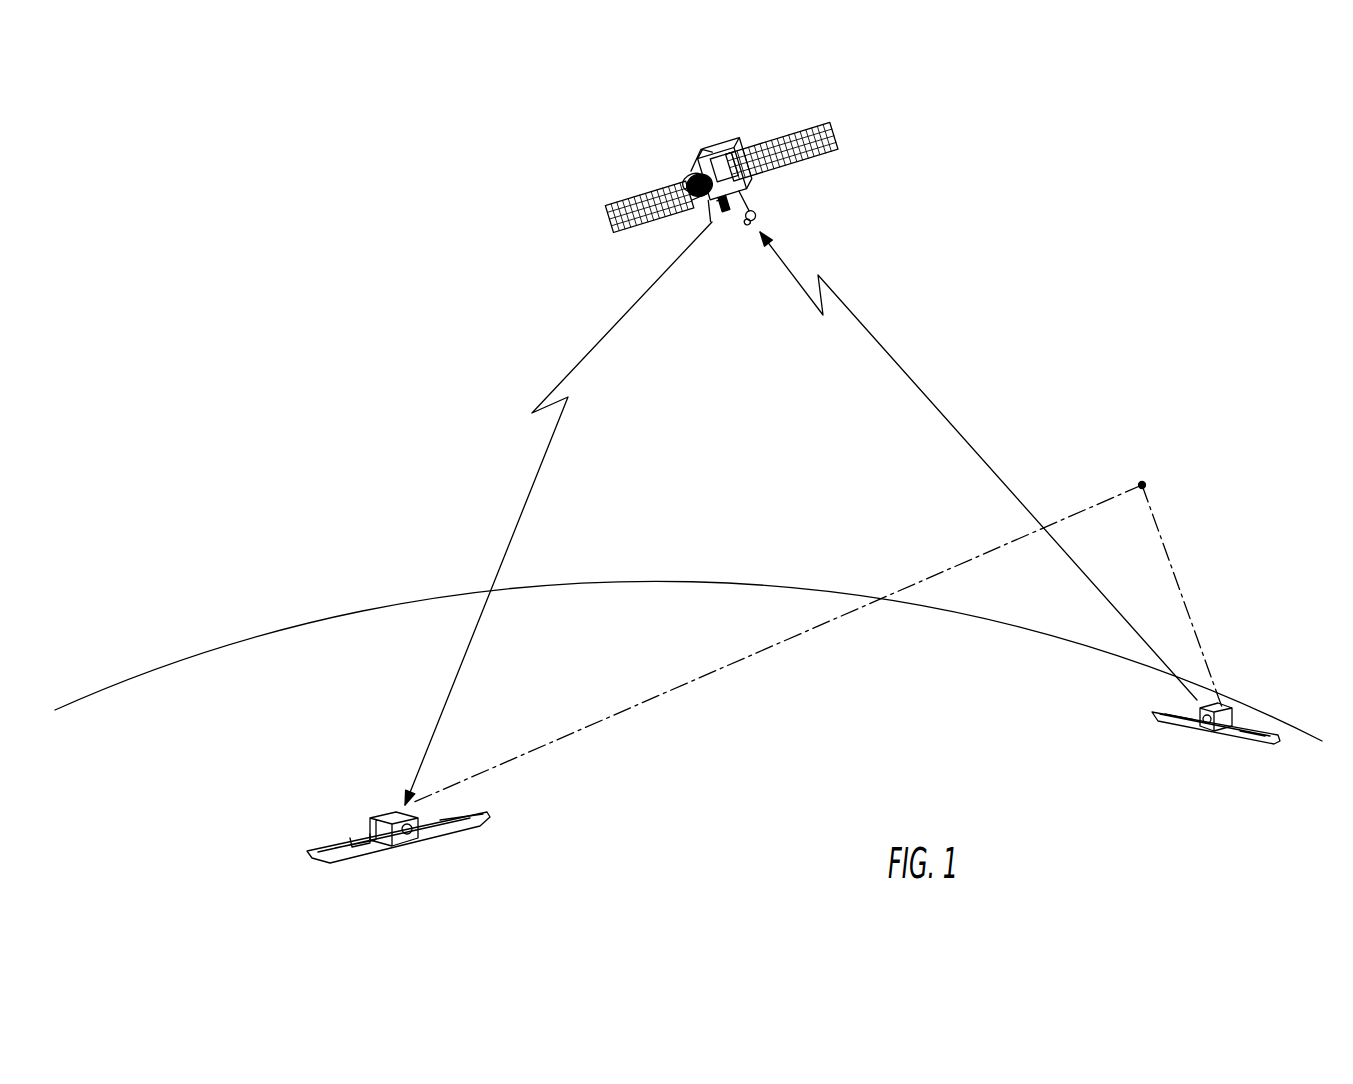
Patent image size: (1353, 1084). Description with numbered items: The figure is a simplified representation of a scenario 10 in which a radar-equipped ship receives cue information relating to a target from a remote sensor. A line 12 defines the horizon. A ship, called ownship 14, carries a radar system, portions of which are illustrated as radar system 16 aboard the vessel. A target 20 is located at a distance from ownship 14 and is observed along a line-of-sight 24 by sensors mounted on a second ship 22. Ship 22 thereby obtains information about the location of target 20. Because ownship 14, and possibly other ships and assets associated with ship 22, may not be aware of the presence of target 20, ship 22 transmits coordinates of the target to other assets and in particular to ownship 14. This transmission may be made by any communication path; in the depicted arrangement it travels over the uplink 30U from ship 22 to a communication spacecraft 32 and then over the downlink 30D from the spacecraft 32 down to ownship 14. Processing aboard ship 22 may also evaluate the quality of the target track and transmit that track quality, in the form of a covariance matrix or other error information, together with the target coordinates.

The scenario 10 is at (668, 818).
The line 12 is at (592, 585).
The ship (ownship) 14 is at (385, 822).
The radar system 16 is at (396, 811).
The target 20 is at (1141, 482).
The ship 22 is at (1263, 740).
The line-of-sight 24 is at (1177, 580).
The downlink 30D is at (608, 333).
The uplink 30U is at (895, 360).
The communication spacecraft 32 is at (716, 152).